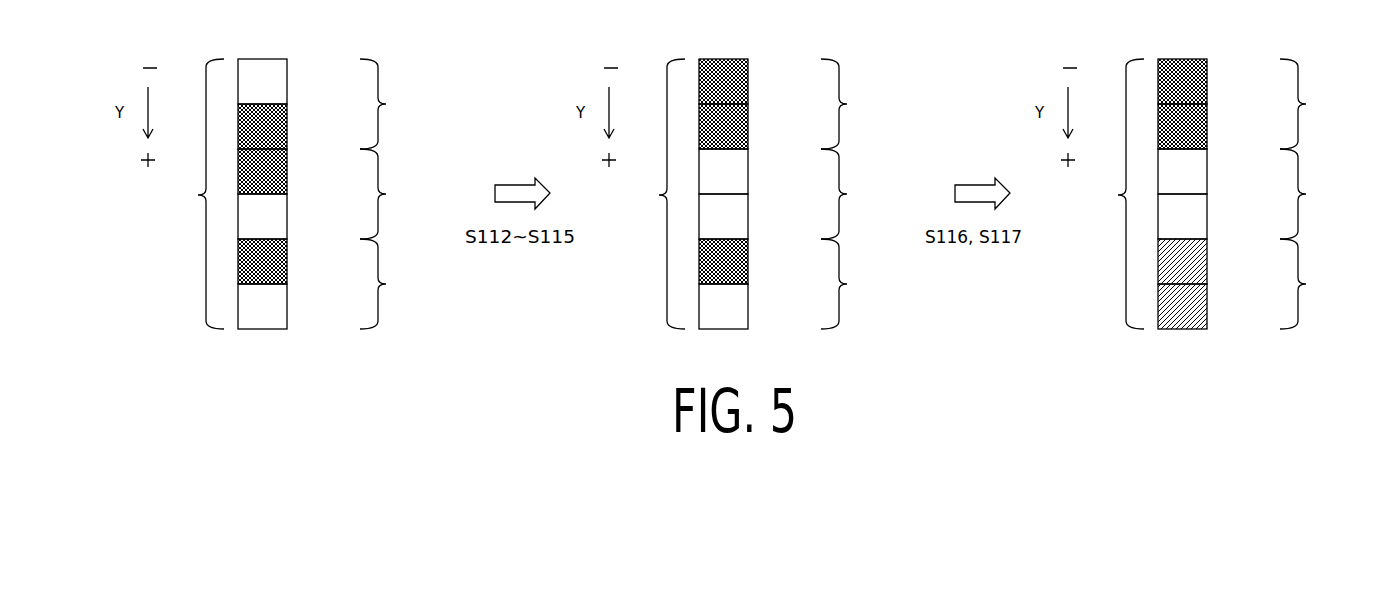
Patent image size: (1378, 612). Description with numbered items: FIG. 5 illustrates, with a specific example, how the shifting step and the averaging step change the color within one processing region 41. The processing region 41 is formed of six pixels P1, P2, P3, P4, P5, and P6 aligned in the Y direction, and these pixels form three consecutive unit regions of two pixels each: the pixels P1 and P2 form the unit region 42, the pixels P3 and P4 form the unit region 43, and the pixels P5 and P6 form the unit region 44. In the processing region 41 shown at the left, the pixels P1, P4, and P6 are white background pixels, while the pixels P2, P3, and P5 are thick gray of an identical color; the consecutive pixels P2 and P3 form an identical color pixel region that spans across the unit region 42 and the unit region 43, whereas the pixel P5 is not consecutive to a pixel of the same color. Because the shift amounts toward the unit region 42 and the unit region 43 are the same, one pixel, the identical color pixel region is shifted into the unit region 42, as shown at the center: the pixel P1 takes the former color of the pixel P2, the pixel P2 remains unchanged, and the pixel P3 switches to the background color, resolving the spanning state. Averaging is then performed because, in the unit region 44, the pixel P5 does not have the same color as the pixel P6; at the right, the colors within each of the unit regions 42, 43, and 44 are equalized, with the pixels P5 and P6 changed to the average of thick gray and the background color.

The processing region 41 is at (198, 195).
The unit region 42 is at (386, 104).
The unit region 43 is at (386, 194).
The unit region 44 is at (386, 284).
The pixel P1 is at (283, 86).
The pixel P2 is at (283, 131).
The pixel P3 is at (283, 176).
The pixel P4 is at (283, 221).
The pixel P5 is at (283, 266).
The pixel P6 is at (283, 311).